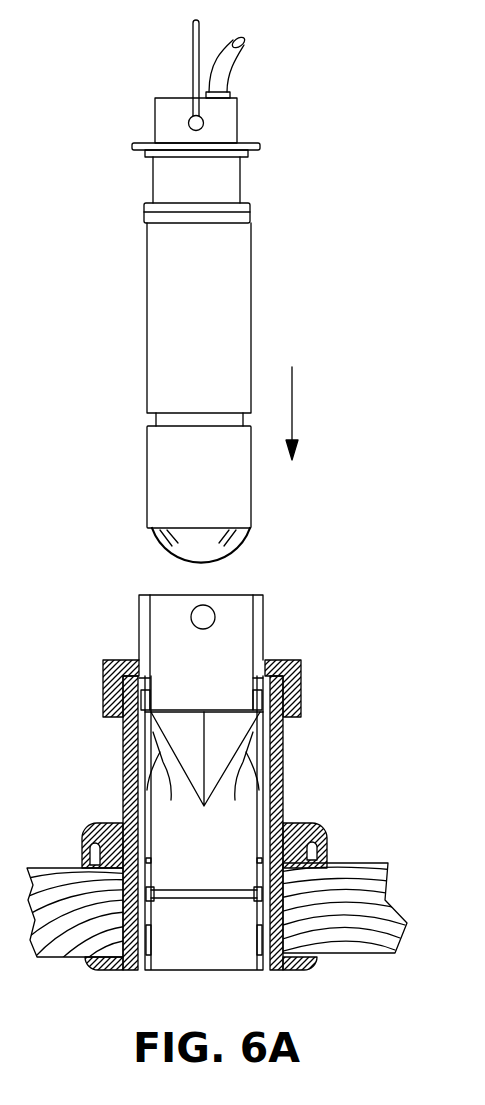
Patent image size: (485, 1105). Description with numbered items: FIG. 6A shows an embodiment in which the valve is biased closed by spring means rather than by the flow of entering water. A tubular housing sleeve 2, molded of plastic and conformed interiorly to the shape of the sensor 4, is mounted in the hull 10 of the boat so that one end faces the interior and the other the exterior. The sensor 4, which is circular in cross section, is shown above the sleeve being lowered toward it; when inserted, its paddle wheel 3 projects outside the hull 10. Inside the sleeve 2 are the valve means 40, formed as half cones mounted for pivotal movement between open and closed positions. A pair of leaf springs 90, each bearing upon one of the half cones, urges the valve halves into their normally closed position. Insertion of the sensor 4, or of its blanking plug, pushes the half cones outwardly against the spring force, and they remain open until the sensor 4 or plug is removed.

The sensor 4 is at (124, 325).
The paddle wheel 3 is at (172, 545).
The valve means 40 is at (235, 700).
The leaf springs 90 is at (203, 783).
The housing sleeve 2 is at (283, 815).
The hull 10 is at (350, 862).